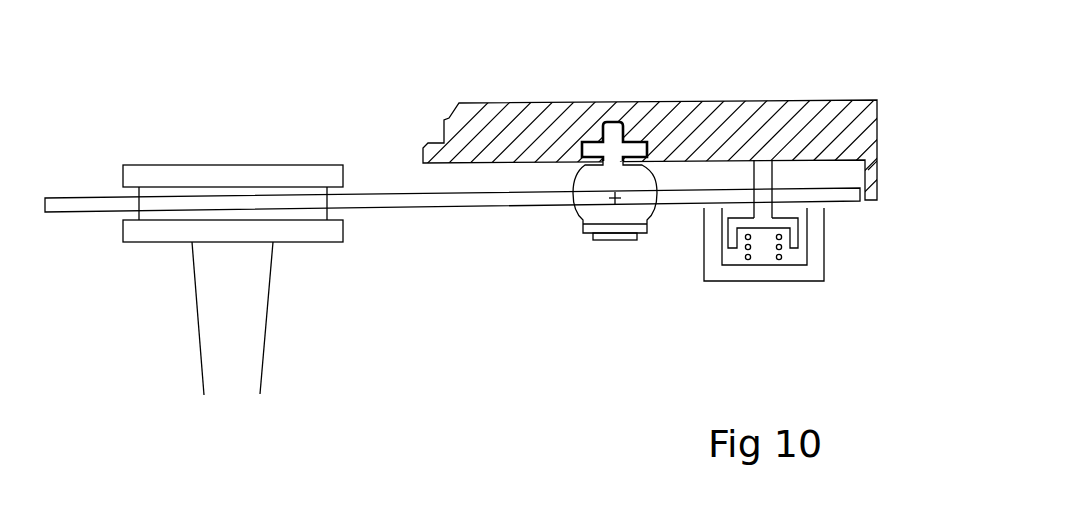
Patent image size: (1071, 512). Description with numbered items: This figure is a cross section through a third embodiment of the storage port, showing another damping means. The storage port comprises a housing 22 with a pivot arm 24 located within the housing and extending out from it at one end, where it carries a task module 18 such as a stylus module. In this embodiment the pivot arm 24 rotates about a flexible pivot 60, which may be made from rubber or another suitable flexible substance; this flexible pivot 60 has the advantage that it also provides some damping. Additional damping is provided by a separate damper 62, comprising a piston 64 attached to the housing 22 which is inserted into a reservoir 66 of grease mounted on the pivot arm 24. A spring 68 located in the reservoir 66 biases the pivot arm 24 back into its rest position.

The task module 18 is at (245, 342).
The housing 22 is at (815, 113).
The pivot arm 24 is at (408, 207).
The flexible pivot 60 is at (609, 223).
The damper 62 is at (692, 263).
The piston 64 is at (765, 175).
The reservoir 66 is at (755, 273).
The spring 68 is at (787, 257).